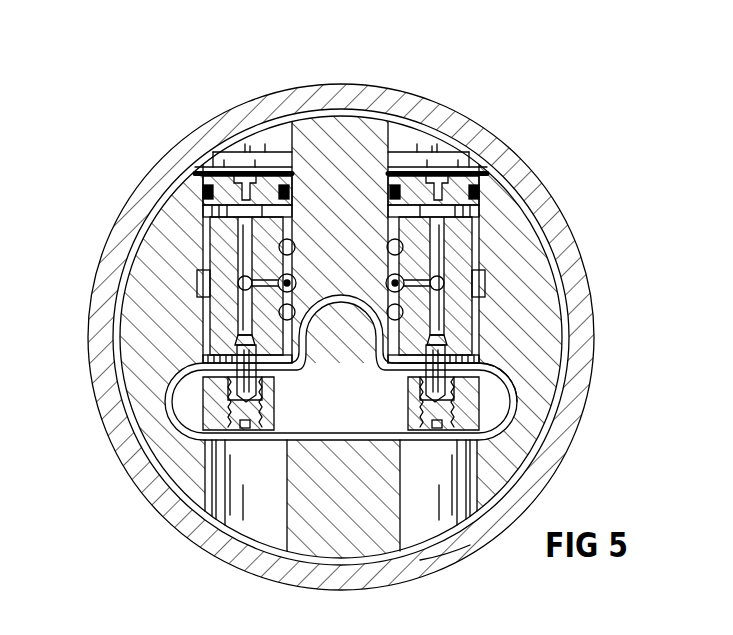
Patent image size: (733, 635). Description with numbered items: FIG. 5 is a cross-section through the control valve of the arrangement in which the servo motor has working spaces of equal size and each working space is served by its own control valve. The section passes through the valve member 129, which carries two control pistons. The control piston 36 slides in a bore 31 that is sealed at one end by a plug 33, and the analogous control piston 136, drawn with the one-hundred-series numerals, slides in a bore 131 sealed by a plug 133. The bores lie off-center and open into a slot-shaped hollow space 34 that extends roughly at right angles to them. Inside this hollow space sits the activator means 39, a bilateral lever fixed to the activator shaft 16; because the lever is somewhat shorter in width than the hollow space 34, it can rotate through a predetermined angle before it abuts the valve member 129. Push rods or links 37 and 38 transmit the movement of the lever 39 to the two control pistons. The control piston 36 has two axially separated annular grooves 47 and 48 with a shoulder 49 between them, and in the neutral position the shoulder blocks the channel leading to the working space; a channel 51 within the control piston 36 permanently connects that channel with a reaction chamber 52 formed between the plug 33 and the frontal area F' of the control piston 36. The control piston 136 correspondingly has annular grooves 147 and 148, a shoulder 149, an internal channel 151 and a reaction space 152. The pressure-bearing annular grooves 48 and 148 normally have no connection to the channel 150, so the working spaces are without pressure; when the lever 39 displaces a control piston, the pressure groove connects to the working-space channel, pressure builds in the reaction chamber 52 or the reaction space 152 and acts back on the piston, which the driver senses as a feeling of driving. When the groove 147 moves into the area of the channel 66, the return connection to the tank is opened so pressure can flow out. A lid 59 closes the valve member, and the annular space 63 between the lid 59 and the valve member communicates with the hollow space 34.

The activator shaft 16 is at (337, 318).
The bore 31 is at (473, 219).
The plug 33 is at (455, 133).
The slot-shaped hollow space 34 is at (503, 400).
The control piston 36 is at (474, 343).
The push rod (link) 37 is at (235, 368).
The push rod (link) 38 is at (493, 368).
The activator means (bilateral lever) 39 is at (373, 425).
The annular groove (T) 47 is at (479, 248).
The annular groove (P) 48 is at (479, 315).
The shoulder 49 is at (485, 268).
The channel 51 is at (479, 223).
The reaction chamber 52 is at (496, 174).
The lid 59 is at (337, 580).
The annular space 63 is at (443, 540).
The channel 66 is at (292, 300).
The valve member 129 is at (318, 513).
The bore 131 is at (203, 206).
The plug 133 is at (228, 152).
The control piston 136 is at (208, 342).
The annular groove (T') 147 is at (203, 248).
The annular groove (P') 148 is at (203, 317).
The shoulder 149 is at (197, 272).
The channel 150 is at (397, 243).
The channel 151 is at (203, 225).
The reaction space 152 is at (202, 170).
The frontal area F' is at (345, 164).